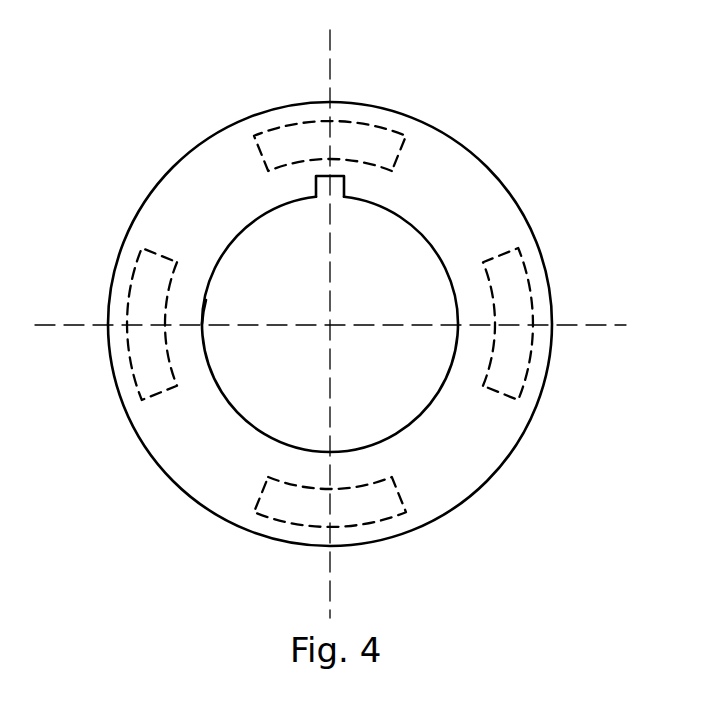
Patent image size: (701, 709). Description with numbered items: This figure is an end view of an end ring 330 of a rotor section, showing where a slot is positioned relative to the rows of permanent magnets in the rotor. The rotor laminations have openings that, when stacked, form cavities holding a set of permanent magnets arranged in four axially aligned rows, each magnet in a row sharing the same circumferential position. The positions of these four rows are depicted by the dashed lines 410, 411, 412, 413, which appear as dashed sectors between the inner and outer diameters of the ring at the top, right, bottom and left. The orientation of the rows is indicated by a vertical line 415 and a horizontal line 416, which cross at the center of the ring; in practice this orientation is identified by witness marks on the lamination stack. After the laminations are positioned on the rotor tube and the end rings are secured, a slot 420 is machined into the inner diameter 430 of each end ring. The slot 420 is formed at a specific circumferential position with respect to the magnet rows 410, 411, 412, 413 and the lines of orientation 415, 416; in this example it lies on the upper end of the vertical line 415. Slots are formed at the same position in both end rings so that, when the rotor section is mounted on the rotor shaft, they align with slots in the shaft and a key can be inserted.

The end ring 330 is at (405, 222).
The row of permanent magnets 410 is at (277, 128).
The row of permanent magnets 411 is at (523, 270).
The row of permanent magnets 412 is at (286, 525).
The row of permanent magnets 413 is at (131, 283).
The vertical line of orientation 415 is at (332, 44).
The horizontal line of orientation 416 is at (52, 330).
The slot 420 is at (322, 193).
The inner diameter 430 is at (206, 286).